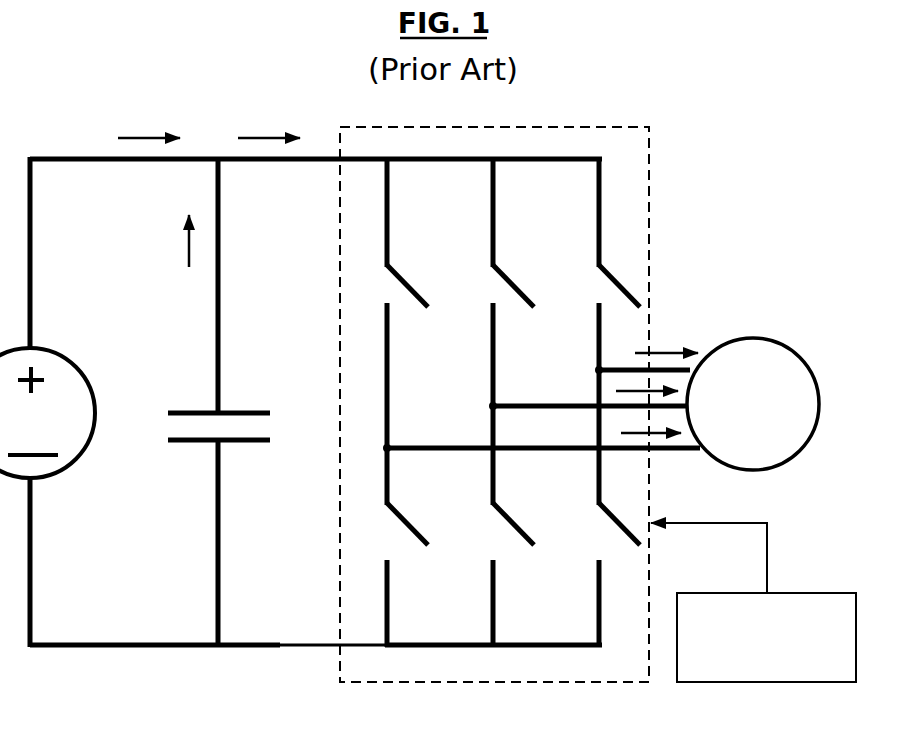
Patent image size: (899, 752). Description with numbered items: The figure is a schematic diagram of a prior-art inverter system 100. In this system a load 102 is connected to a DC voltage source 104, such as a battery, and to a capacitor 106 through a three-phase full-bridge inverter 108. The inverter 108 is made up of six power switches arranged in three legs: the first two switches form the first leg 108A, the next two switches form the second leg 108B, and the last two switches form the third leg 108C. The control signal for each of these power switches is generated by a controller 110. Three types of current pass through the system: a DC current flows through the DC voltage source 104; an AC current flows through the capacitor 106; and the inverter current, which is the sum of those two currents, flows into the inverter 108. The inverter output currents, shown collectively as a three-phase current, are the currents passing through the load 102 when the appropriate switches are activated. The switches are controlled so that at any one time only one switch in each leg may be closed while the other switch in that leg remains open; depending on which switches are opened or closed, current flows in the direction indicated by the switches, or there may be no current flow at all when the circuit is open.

The inverter system 100 is at (76, 106).
The load 102 is at (753, 404).
The DC voltage source 104 is at (47, 421).
The capacitor 106 is at (222, 430).
The three-phase full-bridge inverter 108 is at (649, 222).
The first leg 108A is at (397, 660).
The second leg 108B is at (500, 660).
The third leg 108C is at (603, 660).
The controller 110 is at (753, 602).